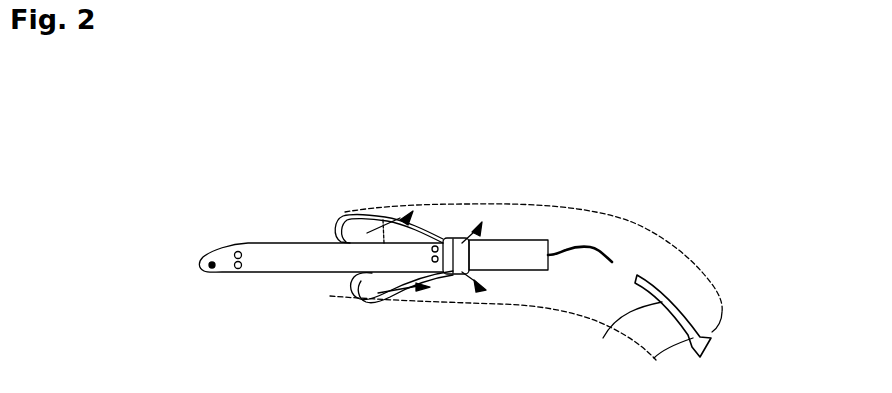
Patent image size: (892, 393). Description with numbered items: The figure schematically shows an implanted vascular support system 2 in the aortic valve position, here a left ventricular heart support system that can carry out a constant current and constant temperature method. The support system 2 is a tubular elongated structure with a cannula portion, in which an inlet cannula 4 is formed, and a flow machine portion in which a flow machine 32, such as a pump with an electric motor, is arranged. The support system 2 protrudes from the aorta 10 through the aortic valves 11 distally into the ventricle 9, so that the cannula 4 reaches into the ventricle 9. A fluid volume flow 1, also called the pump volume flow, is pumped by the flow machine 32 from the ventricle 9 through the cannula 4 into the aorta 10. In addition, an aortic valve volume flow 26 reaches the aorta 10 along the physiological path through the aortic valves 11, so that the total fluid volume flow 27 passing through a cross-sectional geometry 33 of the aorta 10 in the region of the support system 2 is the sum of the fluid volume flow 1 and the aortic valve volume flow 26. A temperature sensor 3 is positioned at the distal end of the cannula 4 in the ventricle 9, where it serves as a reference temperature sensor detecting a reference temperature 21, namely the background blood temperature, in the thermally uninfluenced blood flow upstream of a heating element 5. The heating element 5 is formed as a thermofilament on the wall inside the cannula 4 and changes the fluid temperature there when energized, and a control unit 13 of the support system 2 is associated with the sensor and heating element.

The fluid volume flow 1 is at (456, 240).
The implanted vascular support system 2 is at (700, 194).
The temperature sensor 3 is at (215, 275).
The cannula 4 is at (178, 254).
The heating element 5 is at (279, 275).
The ventricle 9 is at (183, 170).
The aorta 10 is at (672, 247).
The aortic valves 11 is at (348, 301).
The control unit 13 is at (512, 253).
The reference temperature 21 is at (238, 260).
The aortic valve volume flow 26 is at (392, 228).
The total fluid volume flow 27 is at (650, 319).
The flow machine 32 is at (512, 272).
The cross-sectional geometry 33 is at (320, 297).